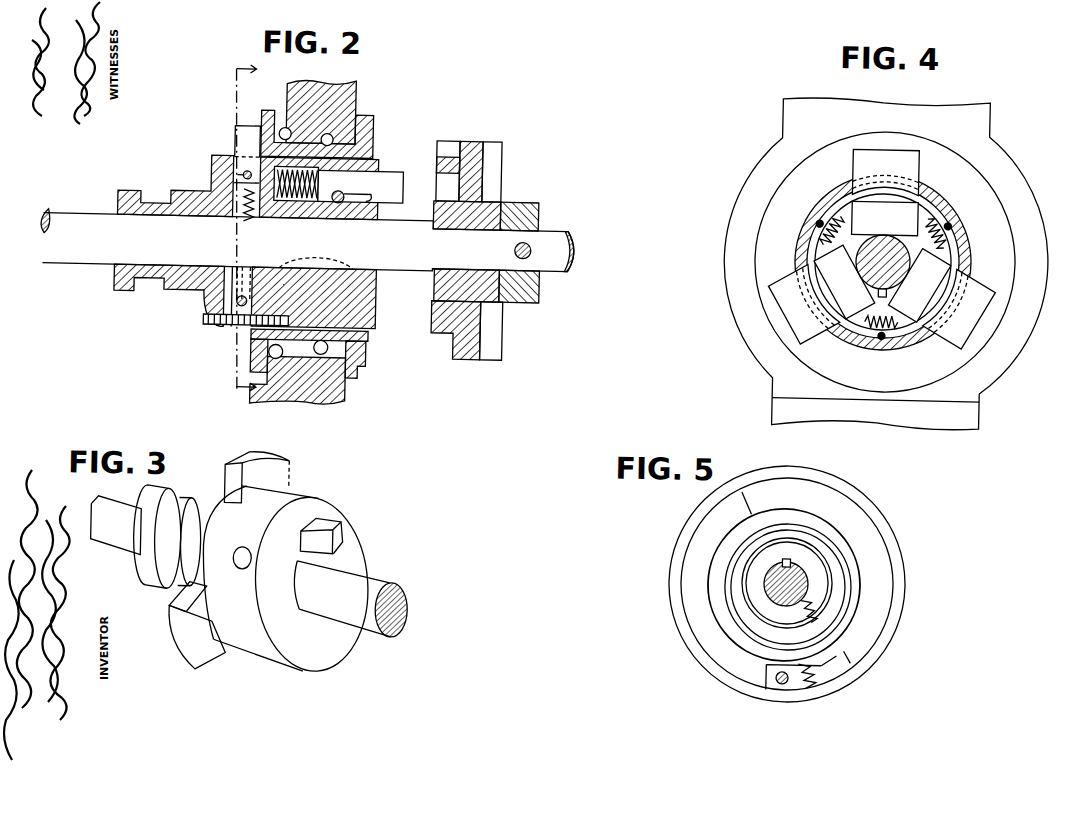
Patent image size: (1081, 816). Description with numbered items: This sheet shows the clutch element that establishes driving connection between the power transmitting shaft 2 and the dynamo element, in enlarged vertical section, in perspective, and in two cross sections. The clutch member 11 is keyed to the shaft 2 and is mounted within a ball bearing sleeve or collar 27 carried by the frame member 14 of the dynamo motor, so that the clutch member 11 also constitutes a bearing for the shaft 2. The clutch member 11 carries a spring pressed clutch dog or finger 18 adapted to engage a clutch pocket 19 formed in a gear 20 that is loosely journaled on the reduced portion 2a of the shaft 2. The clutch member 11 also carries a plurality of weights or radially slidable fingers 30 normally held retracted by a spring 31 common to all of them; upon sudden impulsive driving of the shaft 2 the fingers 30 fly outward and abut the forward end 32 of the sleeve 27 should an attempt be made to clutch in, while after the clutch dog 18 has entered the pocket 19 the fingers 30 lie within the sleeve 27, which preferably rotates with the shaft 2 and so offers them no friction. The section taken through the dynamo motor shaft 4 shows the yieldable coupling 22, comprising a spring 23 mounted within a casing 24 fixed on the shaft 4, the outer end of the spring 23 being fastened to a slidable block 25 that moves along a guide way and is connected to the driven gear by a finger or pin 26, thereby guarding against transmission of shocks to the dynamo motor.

In FIG. 2, the shaft 2 is at (402, 243).
In FIG. 3, the shaft 2 is at (357, 633).
In FIG. 4, the shaft 2 is at (890, 284).
In FIG. 2, the reduced portion of the shaft 2a is at (616, 242).
In FIG. 2, the shaft of the dynamo motor element 4 is at (237, 230).
In FIG. 5, the shaft of the dynamo motor element 4 is at (793, 578).
In FIG. 2, the clutch member 11 is at (375, 297).
In FIG. 3, the clutch member 11 is at (207, 490).
In FIG. 4, the clutch member 11 is at (800, 250).
In FIG. 2, the frame member 14 is at (340, 104).
In FIG. 4, the frame member 14 is at (998, 370).
In FIG. 2, the clutch dog 18 is at (388, 176).
In FIG. 3, the clutch dog 18 is at (337, 535).
In FIG. 2, the clutch pocket 19 is at (450, 180).
In FIG. 2, the gear 20 is at (492, 341).
In FIG. 5, the yieldable coupling 22 is at (866, 611).
In FIG. 5, the spring 23 is at (846, 656).
In FIG. 5, the casing 24 is at (900, 568).
In FIG. 5, the slidable block 25 is at (802, 688).
In FIG. 5, the finger or pin 26 is at (780, 684).
In FIG. 2, the ball bearing sleeve 27 is at (262, 344).
In FIG. 4, the ball bearing sleeve 27 is at (987, 195).
In FIG. 2, the radially slidable fingers 30 is at (234, 149).
In FIG. 3, the radially slidable fingers 30 is at (280, 472).
In FIG. 4, the radially slidable fingers 30 is at (882, 249).
In FIG. 2, the spring 31 is at (235, 220).
In FIG. 4, the spring 31 is at (955, 253).
In FIG. 2, the forward end of the member 32 is at (264, 122).
In FIG. 4, the forward end of the member 32 is at (883, 278).